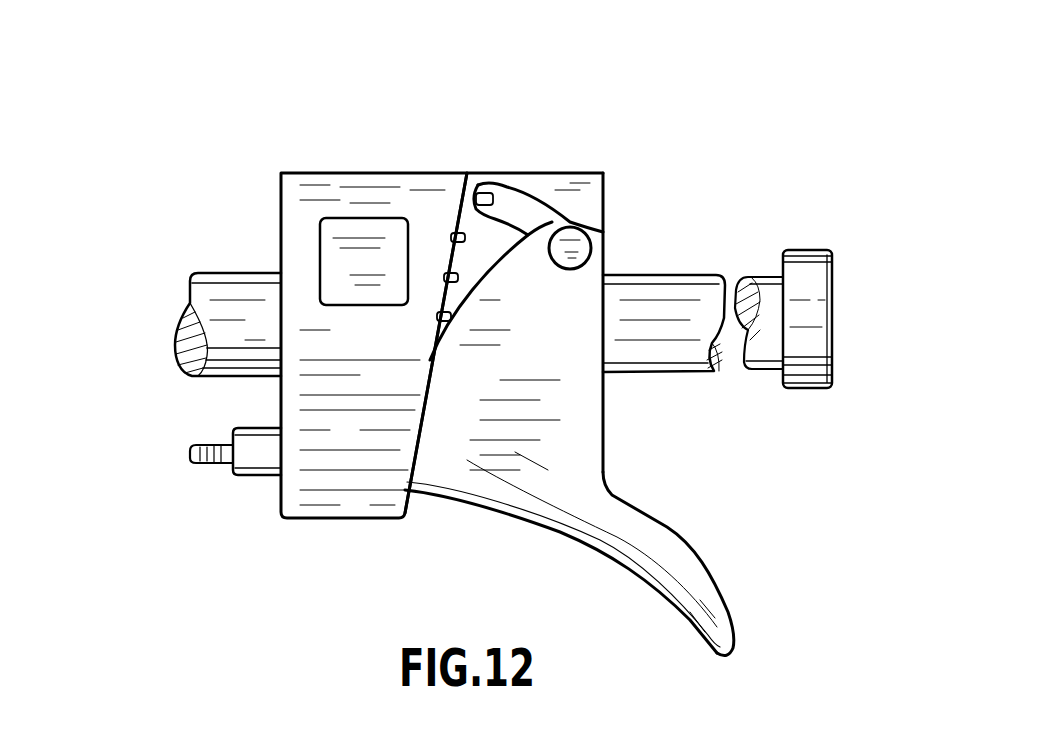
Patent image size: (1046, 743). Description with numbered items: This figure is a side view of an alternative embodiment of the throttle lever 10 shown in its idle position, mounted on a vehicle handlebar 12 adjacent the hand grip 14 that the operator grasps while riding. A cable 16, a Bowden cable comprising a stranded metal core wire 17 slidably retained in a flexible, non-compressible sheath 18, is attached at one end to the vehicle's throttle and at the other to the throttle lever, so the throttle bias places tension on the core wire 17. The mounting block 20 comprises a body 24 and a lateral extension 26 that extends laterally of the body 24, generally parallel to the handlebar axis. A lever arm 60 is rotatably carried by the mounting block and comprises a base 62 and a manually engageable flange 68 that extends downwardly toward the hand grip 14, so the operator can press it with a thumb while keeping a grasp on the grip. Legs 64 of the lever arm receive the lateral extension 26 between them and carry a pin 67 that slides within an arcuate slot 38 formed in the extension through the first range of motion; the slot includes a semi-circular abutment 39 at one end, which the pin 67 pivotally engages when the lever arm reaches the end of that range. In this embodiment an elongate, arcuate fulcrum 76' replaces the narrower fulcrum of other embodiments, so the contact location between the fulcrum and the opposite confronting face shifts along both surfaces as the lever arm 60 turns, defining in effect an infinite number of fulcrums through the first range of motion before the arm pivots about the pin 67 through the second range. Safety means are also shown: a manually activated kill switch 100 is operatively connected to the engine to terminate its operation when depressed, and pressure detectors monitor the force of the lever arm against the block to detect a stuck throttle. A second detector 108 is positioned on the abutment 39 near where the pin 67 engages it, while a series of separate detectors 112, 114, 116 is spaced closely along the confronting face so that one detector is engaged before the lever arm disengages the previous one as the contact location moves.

The throttle lever 10 is at (178, 172).
The handlebar 12 is at (228, 288).
The hand grip 14 is at (762, 282).
The cable 16 is at (150, 447).
The core wire 17 is at (203, 466).
The sheath 18 is at (262, 454).
The mounting block 20 is at (388, 160).
The body 24 is at (320, 396).
The lateral extension 26 is at (588, 194).
The arcuate slot 38 is at (515, 205).
The abutment 39 is at (481, 192).
The lever arm 60 is at (758, 570).
The base 62 is at (580, 428).
The legs 64 is at (585, 313).
The pin 67 is at (578, 244).
The manually engageable flange 68 is at (650, 568).
The elongate arcuate fulcrum 76' is at (491, 291).
The kill switch 100 is at (357, 250).
The second detector 108 is at (466, 195).
The detector 112 is at (440, 318).
The detector 114 is at (447, 278).
The detector 116 is at (454, 238).